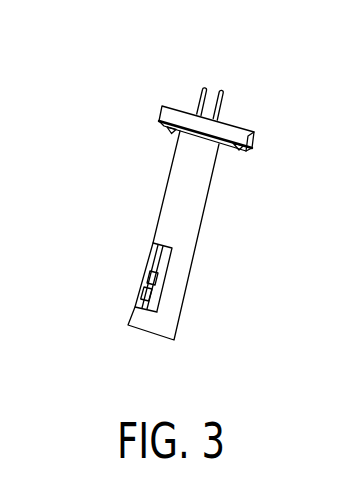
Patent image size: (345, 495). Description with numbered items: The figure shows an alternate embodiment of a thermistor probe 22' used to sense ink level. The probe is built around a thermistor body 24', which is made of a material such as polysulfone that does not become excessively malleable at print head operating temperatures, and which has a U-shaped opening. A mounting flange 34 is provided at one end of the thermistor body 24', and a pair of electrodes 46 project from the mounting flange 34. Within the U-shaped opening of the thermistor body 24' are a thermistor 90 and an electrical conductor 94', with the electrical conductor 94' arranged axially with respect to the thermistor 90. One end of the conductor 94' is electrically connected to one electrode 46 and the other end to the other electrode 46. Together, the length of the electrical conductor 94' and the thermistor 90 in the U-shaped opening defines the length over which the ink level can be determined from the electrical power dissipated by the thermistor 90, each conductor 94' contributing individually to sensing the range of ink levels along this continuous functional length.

The thermistor probe 22' is at (168, 185).
The thermistor body 24' is at (189, 235).
The mounting flange 34 is at (243, 135).
The electrodes 46 is at (231, 91).
The thermistor 90 is at (153, 283).
The electrical conductor 94' is at (111, 266).